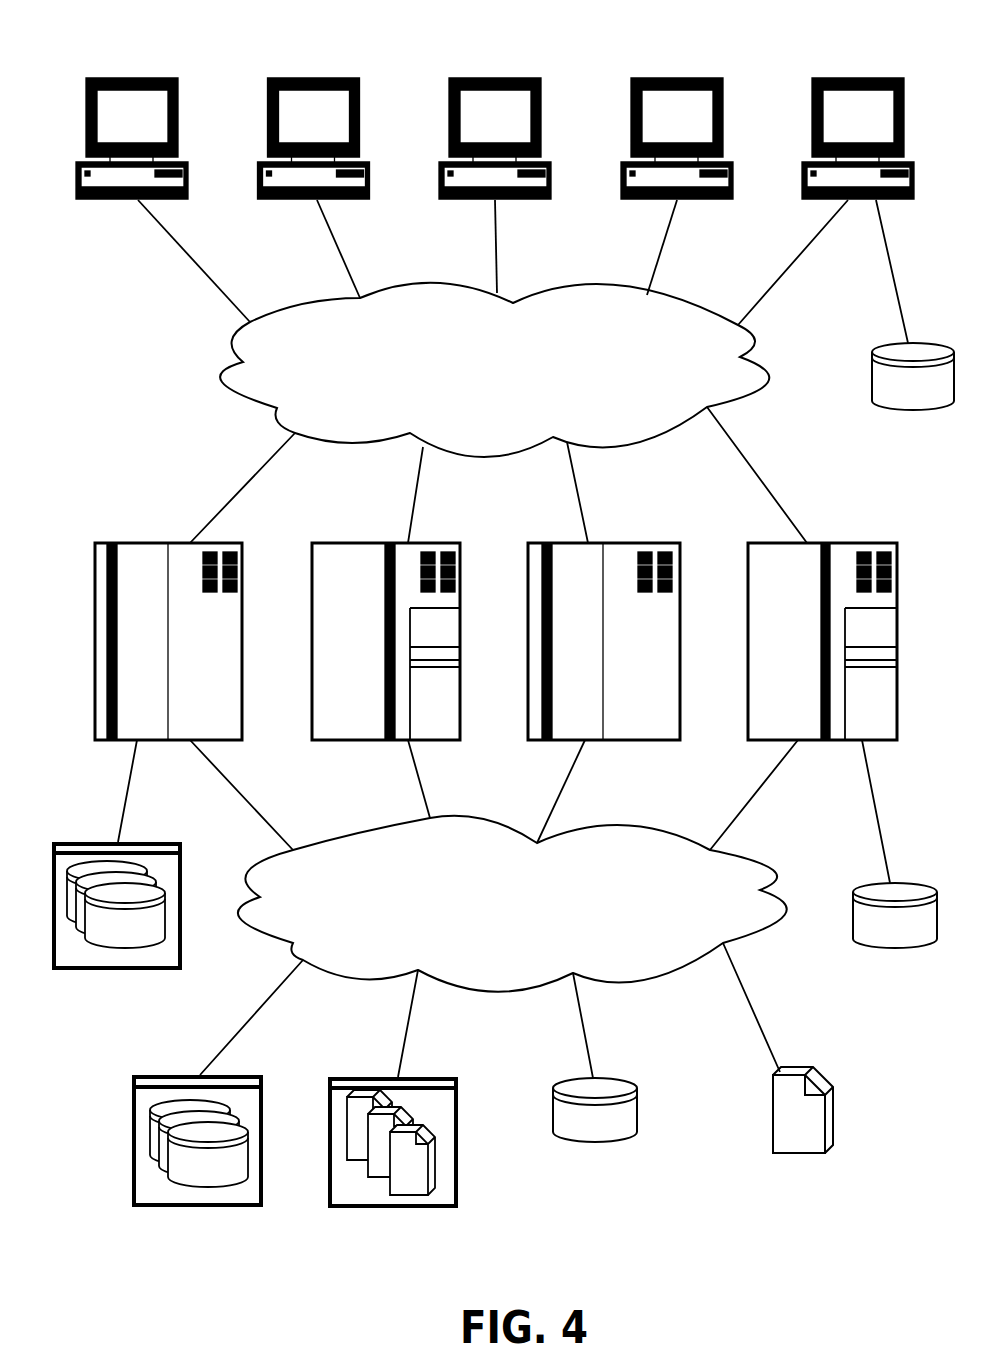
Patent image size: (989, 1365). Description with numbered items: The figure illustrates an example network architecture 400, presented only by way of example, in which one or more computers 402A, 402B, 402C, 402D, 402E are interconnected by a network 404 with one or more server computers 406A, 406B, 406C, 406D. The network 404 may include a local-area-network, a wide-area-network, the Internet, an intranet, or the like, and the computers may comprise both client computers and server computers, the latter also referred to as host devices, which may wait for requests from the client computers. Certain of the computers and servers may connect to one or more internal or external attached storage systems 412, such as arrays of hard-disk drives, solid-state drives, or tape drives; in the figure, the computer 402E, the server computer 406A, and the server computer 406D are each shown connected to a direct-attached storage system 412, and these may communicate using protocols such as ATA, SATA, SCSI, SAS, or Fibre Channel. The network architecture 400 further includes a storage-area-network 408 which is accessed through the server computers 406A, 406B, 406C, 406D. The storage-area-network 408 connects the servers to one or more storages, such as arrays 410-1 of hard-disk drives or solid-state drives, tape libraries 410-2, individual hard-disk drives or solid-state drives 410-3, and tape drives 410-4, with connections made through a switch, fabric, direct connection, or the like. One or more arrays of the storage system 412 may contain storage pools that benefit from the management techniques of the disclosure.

The network architecture 400 is at (132, 58).
The computer 402A is at (159, 126).
The computer 402B is at (341, 126).
The computer 402C is at (523, 126).
The computer 402D is at (704, 126).
The computer 402E is at (885, 126).
The network 404 is at (687, 383).
The server computer 406A is at (235, 647).
The server computer 406B is at (375, 652).
The server computer 406C is at (668, 652).
The server computer 406D is at (812, 652).
The storage-area-network (SAN) 408 is at (658, 918).
The arrays of hard-disk drives or solid-state drives 410-1 is at (197, 1207).
The tape libraries 410-2 is at (393, 1208).
The individual hard-disk drives or solid-state drives 410-3 is at (593, 1148).
The tape drives 410-4 is at (800, 1153).
The attached storage system 412 is at (115, 970).